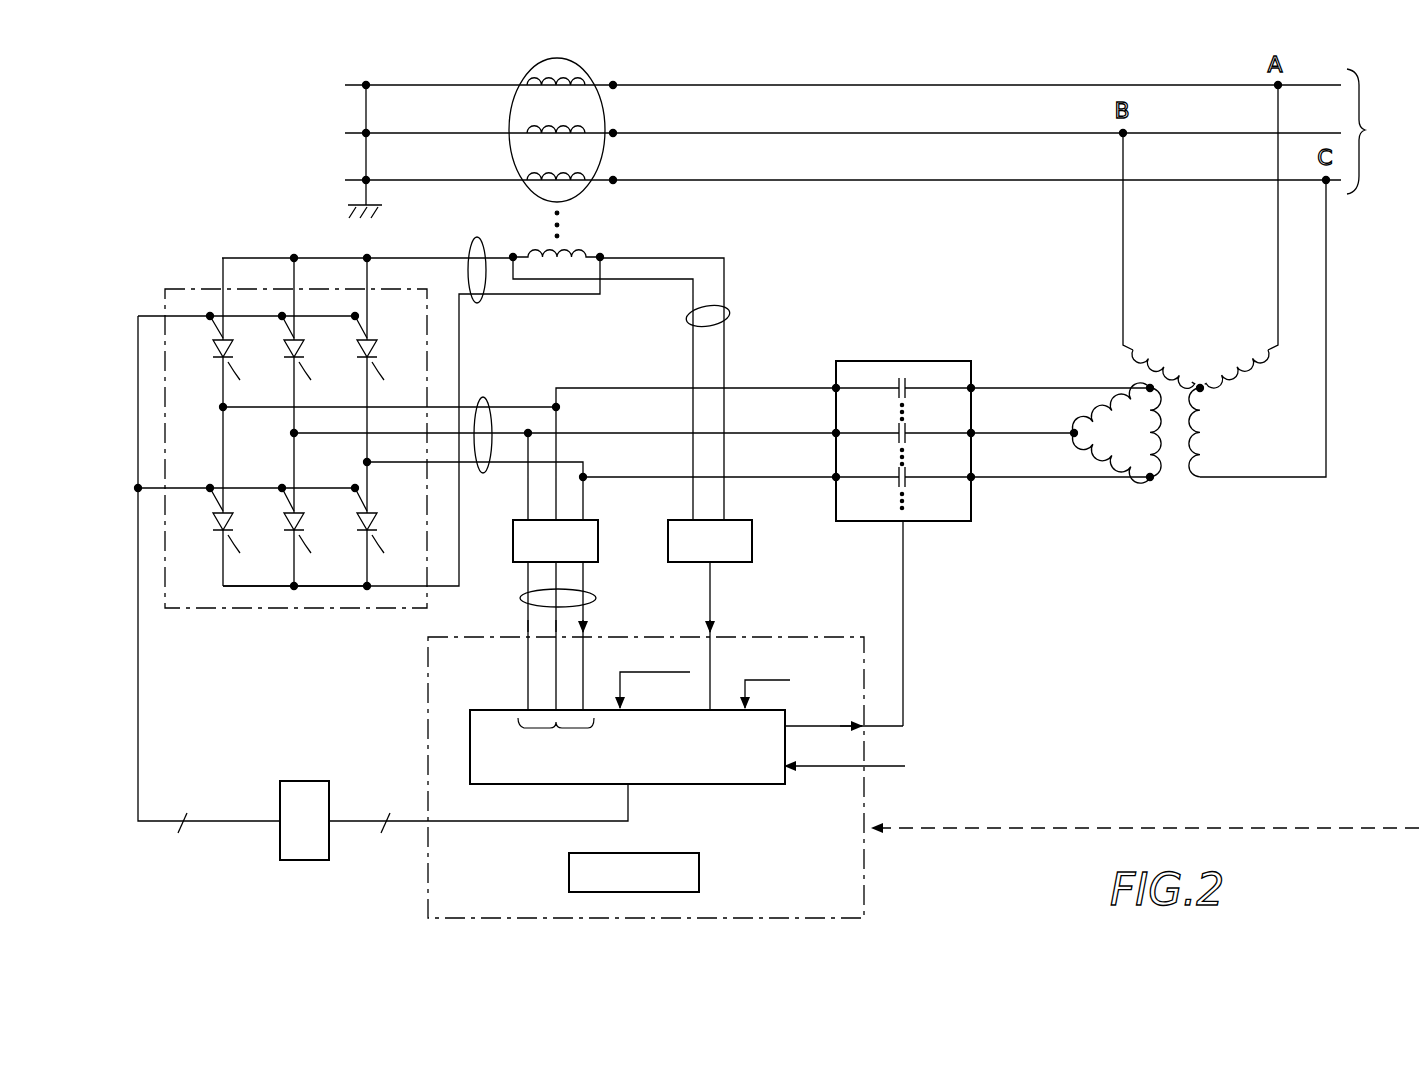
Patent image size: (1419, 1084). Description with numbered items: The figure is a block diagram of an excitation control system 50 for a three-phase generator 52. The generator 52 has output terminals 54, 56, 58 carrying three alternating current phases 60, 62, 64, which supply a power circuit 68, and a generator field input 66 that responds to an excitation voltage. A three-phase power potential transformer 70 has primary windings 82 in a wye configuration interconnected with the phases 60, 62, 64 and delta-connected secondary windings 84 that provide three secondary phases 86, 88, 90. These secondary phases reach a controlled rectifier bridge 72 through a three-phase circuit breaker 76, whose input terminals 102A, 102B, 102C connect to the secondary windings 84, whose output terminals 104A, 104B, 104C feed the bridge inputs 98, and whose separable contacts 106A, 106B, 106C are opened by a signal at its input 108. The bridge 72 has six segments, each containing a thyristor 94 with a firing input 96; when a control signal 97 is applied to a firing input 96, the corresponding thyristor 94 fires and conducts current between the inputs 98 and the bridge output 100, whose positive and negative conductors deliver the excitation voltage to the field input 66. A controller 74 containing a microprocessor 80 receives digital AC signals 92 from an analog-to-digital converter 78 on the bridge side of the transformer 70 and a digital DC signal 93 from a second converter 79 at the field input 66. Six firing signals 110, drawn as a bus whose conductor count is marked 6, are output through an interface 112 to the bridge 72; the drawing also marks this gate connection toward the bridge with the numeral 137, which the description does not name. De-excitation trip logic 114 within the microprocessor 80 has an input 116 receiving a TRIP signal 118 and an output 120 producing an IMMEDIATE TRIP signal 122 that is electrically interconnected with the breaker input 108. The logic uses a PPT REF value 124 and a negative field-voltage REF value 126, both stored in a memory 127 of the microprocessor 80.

The excitation control system 50 is at (1219, 626).
The three-phase generator 52 is at (596, 152).
The output terminal 54 is at (614, 83).
The output terminal 56 is at (614, 131).
The output terminal 58 is at (614, 178).
The AC phase 60 is at (1175, 85).
The AC phase 62 is at (1190, 133).
The AC phase 64 is at (1205, 180).
The generator field input 66 is at (540, 255).
The power circuit 68 is at (1418, 131).
The transformer 70 is at (1148, 301).
The controlled rectifier bridge 72 is at (318, 471).
The controller 74 is at (884, 871).
The three-phase circuit breaker 76 is at (904, 423).
The analog-to-digital converter 78 is at (598, 545).
The analog-to-digital converter 79 is at (752, 545).
The microprocessor 80 is at (426, 686).
The primary windings 82 is at (1244, 384).
The secondary windings 84 is at (1114, 370).
The AC phase 86 is at (1042, 386).
The AC phase 88 is at (1015, 431).
The AC phase 90 is at (1085, 479).
The digital AC signals 92 is at (520, 598).
The digital DC signal 93 is at (712, 606).
The thyristor 94 is at (233, 339).
The firing input 96 is at (212, 330).
The control signal 97 is at (140, 746).
The bridge inputs 98 is at (483, 397).
The bridge output 100 is at (474, 240).
The input terminal 102A is at (973, 384).
The input terminal 102B is at (974, 437).
The input terminal 102C is at (974, 481).
The output terminal 104A is at (834, 386).
The output terminal 104B is at (834, 430).
The output terminal 104C is at (834, 475).
The separable contacts 106A is at (907, 394).
The separable contacts 106B is at (907, 439).
The separable contacts 106C is at (907, 483).
The breaker input 108 is at (905, 525).
The firing signals 110 is at (357, 823).
The interface 112 is at (303, 781).
The de-excitation trip logic 114 is at (690, 788).
The input 116 is at (788, 776).
The TRIP signal 118 is at (884, 766).
The output 120 is at (788, 734).
The IMMEDIATE TRIP signal 122 is at (905, 648).
The PPT REF value 124 is at (648, 674).
The negative VFG REF value 126 is at (775, 682).
The memory 127 is at (569, 878).
The gate bus 137 is at (278, 830).
The six-conductor bus 6 is at (291, 811).